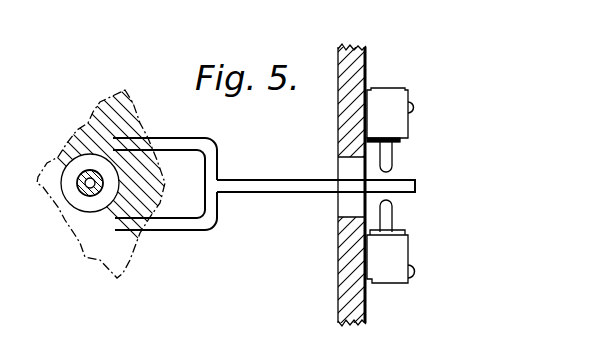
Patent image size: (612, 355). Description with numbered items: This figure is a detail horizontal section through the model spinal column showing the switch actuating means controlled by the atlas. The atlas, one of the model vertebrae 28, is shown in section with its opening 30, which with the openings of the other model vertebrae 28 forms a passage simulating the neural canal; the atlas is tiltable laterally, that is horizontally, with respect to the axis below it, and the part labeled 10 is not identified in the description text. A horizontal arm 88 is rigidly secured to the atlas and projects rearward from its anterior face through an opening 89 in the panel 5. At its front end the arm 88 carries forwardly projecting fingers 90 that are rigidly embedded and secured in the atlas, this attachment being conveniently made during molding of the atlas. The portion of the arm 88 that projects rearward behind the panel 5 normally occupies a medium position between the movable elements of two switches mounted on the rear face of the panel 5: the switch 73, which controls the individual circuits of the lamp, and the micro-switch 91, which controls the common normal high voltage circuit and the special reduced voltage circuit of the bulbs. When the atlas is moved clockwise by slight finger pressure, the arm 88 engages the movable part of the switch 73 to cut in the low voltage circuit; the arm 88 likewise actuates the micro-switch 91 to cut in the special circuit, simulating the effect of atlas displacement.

The panel 5 is at (357, 72).
The body 10 is at (78, 238).
The model vertebrae 28 is at (93, 113).
The openings 30 is at (73, 167).
The switch 73 is at (398, 253).
The horizontal arm 88 is at (258, 187).
The opening 89 is at (350, 165).
The forwardly projecting fingers 90 is at (190, 145).
The micro-switch 91 is at (397, 118).